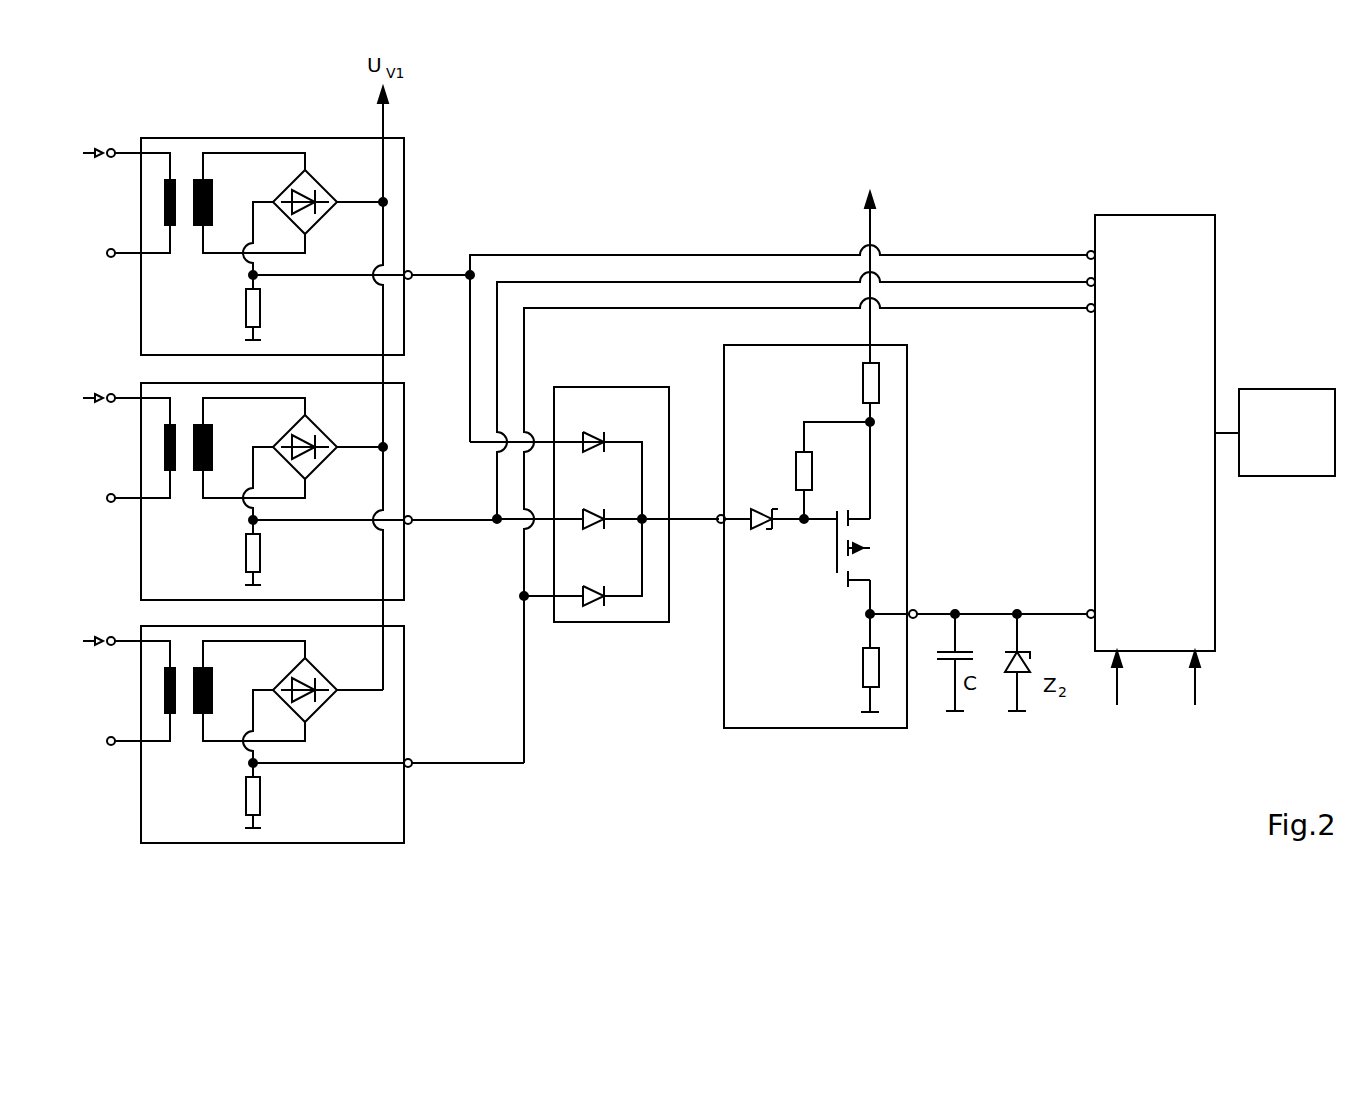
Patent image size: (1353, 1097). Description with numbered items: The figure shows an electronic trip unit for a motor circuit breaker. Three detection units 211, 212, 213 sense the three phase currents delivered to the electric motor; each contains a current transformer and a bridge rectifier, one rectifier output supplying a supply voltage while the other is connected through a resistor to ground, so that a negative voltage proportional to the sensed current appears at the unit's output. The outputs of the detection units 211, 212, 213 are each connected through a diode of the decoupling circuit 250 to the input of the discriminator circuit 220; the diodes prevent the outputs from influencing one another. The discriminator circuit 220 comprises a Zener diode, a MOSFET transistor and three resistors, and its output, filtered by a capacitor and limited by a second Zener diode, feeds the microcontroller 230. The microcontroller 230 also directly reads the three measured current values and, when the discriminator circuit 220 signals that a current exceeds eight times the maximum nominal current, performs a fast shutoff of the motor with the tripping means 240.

The first detection unit 211 is at (407, 668).
The second detection unit 212 is at (405, 490).
The third detection unit 213 is at (405, 176).
The discriminator circuit 220 is at (817, 728).
The microcontroller 230 is at (1215, 583).
The tripping means 240 is at (1300, 476).
The decoupling circuit 250 is at (637, 622).